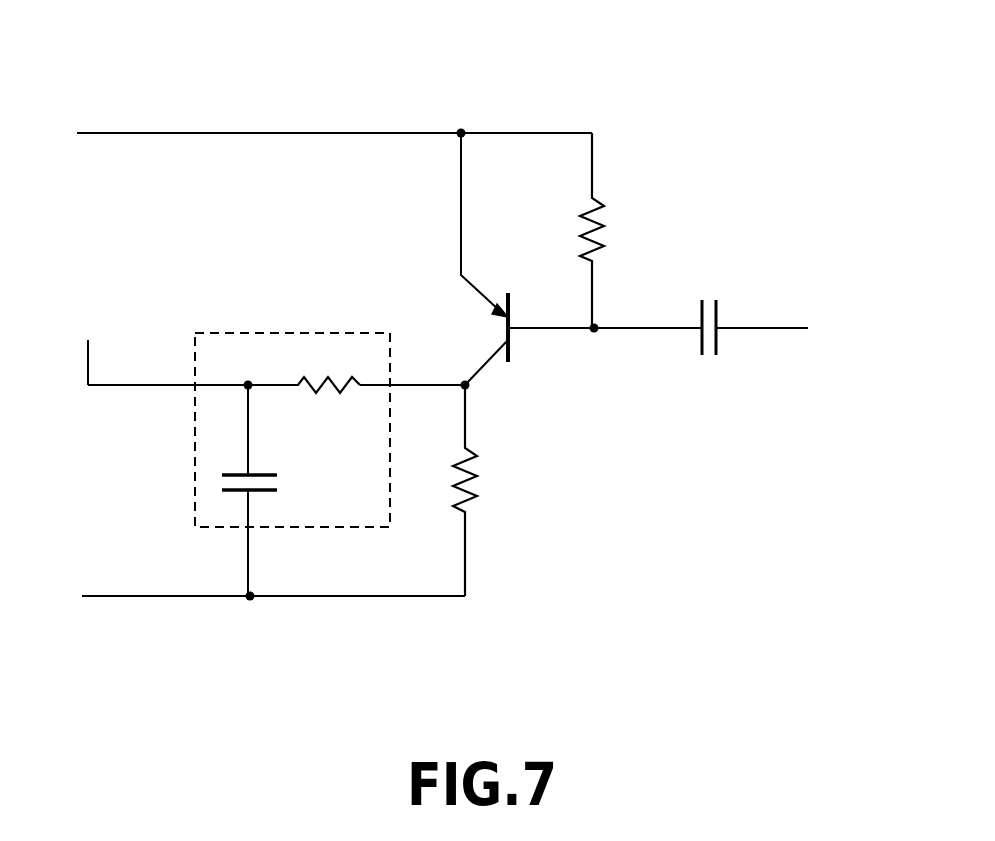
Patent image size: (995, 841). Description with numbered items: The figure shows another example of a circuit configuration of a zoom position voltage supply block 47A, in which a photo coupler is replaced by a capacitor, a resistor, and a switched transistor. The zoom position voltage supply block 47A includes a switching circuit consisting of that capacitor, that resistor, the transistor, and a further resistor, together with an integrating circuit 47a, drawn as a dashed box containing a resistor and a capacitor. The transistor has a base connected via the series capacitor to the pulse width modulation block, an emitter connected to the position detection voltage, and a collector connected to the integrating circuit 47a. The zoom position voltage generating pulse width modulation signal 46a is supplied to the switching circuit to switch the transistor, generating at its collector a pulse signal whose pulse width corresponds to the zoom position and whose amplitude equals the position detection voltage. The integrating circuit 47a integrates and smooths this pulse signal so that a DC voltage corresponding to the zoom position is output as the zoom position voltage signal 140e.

The zoom position voltage supply block 47A is at (641, 172).
The integrating circuit 47a is at (225, 332).
The zoom position voltage signal 140e is at (57, 341).
The zoom position voltage generating pulse width modulation signal 46a is at (806, 327).